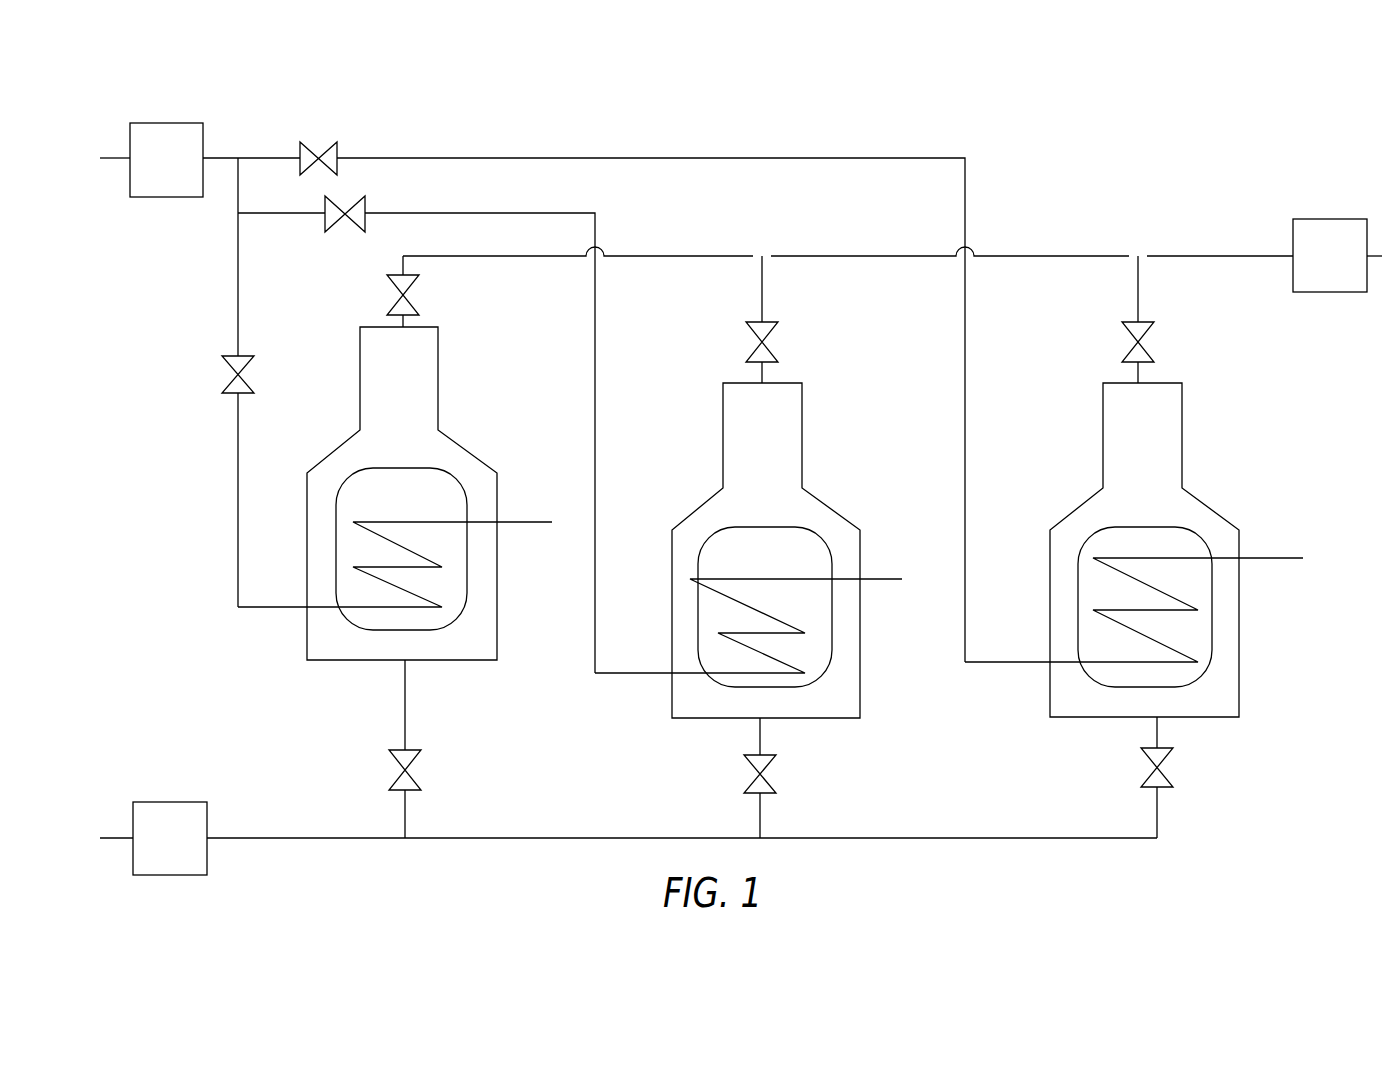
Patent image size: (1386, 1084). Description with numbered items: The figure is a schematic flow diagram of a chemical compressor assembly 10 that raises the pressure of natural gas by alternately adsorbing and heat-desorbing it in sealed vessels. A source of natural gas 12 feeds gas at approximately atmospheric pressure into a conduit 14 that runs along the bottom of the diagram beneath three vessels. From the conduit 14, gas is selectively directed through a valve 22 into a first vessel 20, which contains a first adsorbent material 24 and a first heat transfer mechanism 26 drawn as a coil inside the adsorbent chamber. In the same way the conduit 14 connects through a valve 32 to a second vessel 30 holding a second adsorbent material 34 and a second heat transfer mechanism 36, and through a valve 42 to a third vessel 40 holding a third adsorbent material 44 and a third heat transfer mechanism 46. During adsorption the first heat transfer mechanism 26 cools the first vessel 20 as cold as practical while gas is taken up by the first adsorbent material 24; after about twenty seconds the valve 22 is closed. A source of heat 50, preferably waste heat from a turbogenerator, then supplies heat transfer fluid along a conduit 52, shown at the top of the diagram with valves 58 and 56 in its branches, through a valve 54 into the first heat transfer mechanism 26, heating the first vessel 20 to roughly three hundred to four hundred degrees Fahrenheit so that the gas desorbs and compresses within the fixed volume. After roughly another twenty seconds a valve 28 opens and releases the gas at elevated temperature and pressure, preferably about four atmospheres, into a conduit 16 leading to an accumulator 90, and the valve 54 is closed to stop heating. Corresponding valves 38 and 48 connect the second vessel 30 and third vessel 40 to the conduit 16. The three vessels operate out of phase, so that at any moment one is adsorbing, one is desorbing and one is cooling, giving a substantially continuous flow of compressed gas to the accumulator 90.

The chemical compressor assembly 10 is at (1228, 127).
The source of natural gas 12 is at (153, 838).
The conduit 14 is at (288, 839).
The conduit 16 is at (558, 258).
The first vessel 20 is at (359, 387).
The valve 22 is at (395, 770).
The first adsorbent material 24 is at (363, 455).
The first heat transfer mechanism 26 is at (367, 527).
The valve 28 is at (410, 295).
The second vessel 30 is at (724, 453).
The second inlet valve 32 is at (758, 775).
The second adsorbent material 34 is at (738, 548).
The second heat transfer mechanism 36 is at (718, 592).
The second outlet valve 38 is at (777, 342).
The third vessel 40 is at (1103, 470).
The third inlet valve 42 is at (1153, 770).
The third adsorbent material 44 is at (1115, 543).
The third heat transfer mechanism 46 is at (1115, 570).
The third outlet valve 48 is at (1150, 347).
The source of heat 50 is at (151, 160).
The conduit 52 is at (228, 159).
The valve 54 is at (236, 376).
The heating fluid valve 56 is at (345, 216).
The heating fluid valve 58 is at (318, 158).
The accumulator 90 is at (1337, 255).